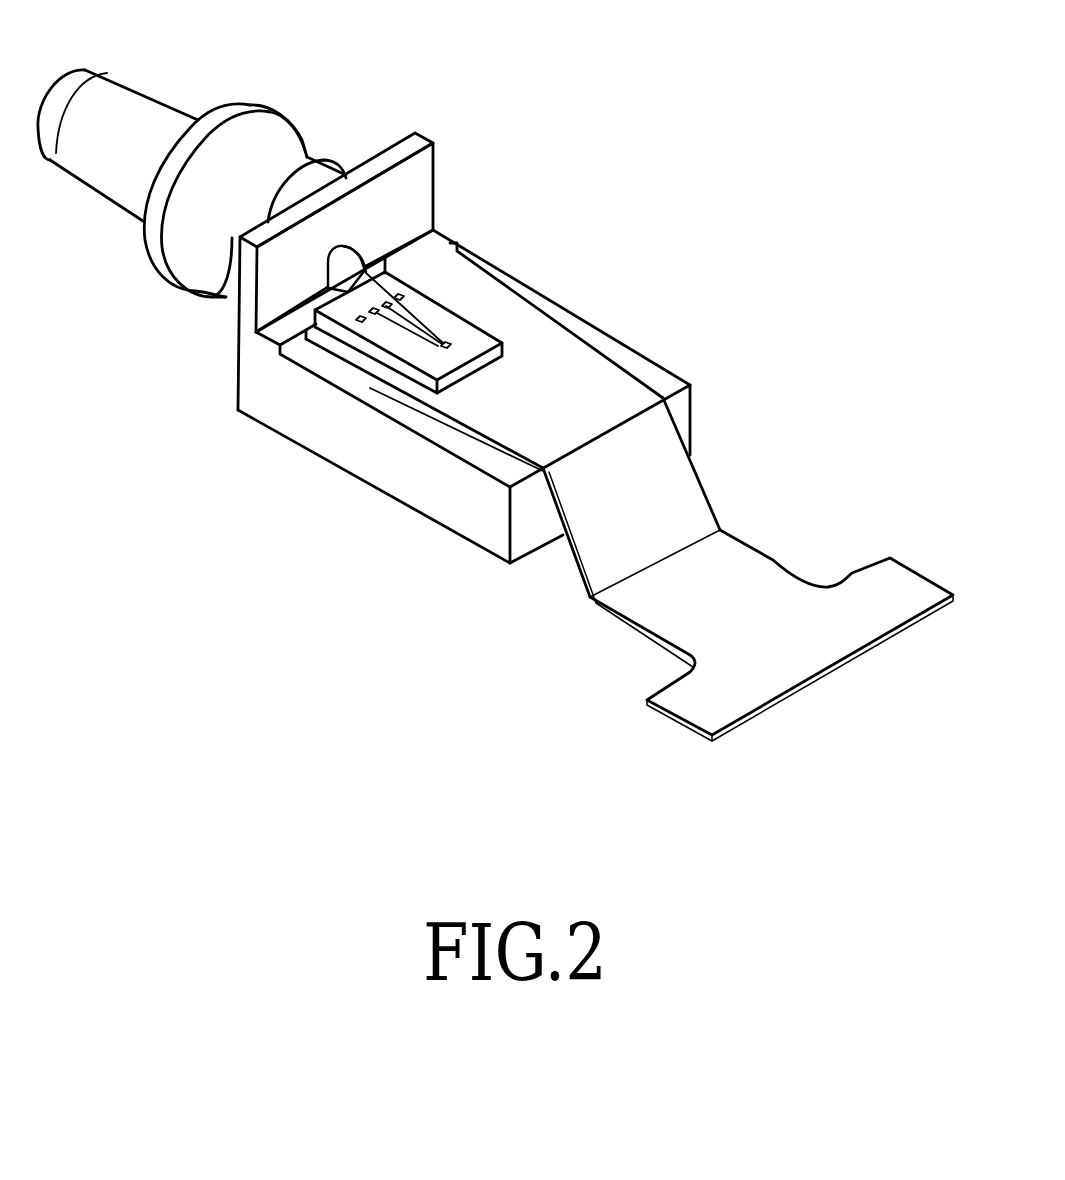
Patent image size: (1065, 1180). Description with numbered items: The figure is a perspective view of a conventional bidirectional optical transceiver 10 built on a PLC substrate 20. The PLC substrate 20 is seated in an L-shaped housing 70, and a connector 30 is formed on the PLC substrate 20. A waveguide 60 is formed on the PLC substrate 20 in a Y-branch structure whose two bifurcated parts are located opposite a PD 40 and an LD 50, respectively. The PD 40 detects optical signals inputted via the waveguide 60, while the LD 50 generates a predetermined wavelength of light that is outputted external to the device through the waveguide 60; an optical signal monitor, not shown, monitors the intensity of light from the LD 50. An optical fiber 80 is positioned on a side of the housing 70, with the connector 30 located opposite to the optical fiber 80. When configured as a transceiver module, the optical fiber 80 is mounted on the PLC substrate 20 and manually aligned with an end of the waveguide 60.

The bidirectional optical transceiver 10 is at (495, 380).
The PLC substrate 20 is at (474, 326).
The connector 30 is at (767, 566).
The PD 40 is at (432, 333).
The LD 50 is at (315, 330).
The waveguide 60 is at (416, 309).
The housing 70 is at (447, 522).
The optical fiber 80 is at (350, 250).